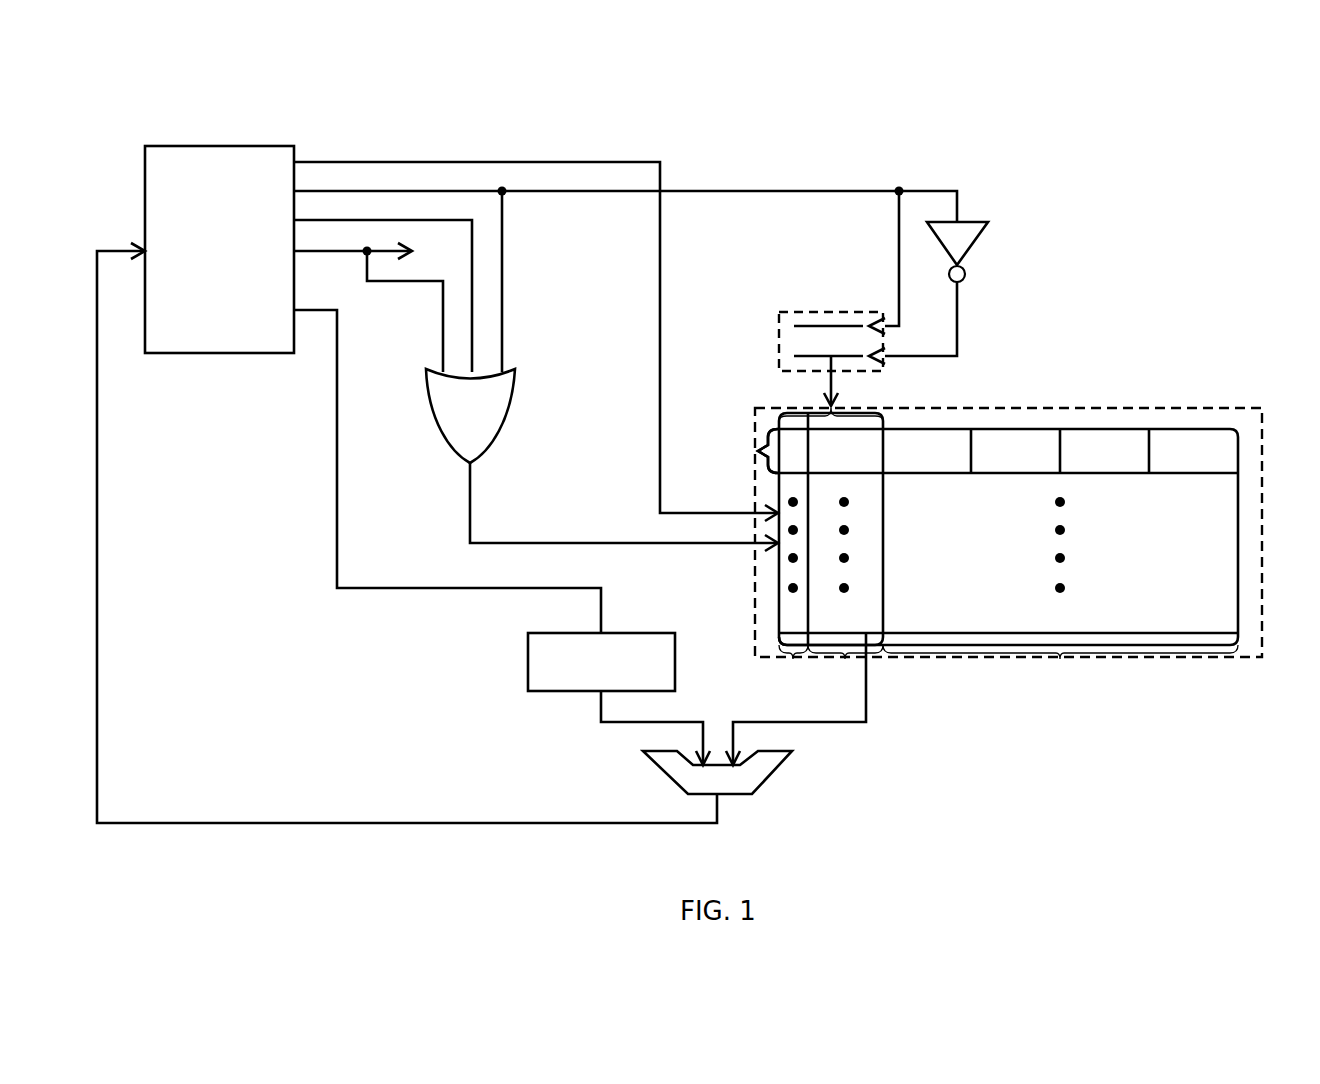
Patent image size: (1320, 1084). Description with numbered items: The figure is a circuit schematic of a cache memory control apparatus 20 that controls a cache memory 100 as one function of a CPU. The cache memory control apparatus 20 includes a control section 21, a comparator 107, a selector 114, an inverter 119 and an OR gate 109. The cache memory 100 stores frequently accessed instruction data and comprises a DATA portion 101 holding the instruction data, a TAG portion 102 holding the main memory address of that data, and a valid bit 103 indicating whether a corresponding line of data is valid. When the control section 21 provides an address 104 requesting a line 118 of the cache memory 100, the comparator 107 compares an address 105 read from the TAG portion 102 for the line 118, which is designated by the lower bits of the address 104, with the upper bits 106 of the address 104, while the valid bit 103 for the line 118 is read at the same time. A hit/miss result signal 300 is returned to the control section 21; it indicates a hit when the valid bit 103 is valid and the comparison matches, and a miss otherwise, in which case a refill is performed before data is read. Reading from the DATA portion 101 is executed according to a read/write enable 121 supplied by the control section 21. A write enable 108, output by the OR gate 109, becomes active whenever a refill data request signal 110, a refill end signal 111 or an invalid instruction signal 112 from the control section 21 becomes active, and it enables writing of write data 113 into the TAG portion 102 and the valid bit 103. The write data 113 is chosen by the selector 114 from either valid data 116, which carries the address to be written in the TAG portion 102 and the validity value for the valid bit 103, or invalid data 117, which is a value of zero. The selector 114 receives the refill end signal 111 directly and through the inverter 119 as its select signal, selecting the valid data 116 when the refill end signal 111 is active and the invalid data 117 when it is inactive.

The cache memory control apparatus 20 is at (1052, 135).
The control section 21 is at (218, 355).
The cache memory 100 is at (1131, 660).
The DATA portion 101 is at (1060, 594).
The TAG portion 102 is at (845, 552).
The valid bit 103 is at (793, 552).
The address 104 is at (528, 664).
The address read from TAG portion 105 is at (866, 692).
The upper bits of address 106 is at (600, 708).
The comparator 107 is at (770, 774).
The write enable 108 is at (575, 541).
The OR gate 109 is at (512, 405).
The refill data request signal 110 is at (338, 253).
The refill end signal 111 is at (443, 190).
The invalid instruction signal 112 is at (367, 218).
The write data 113 is at (826, 380).
The selector 114 is at (779, 344).
The valid data 116 is at (808, 325).
The invalid data 117 is at (846, 355).
The line 118 is at (758, 451).
The inverter 119 is at (977, 243).
The read/write enable 121 is at (662, 251).
The hit/miss result signal 300 is at (545, 825).